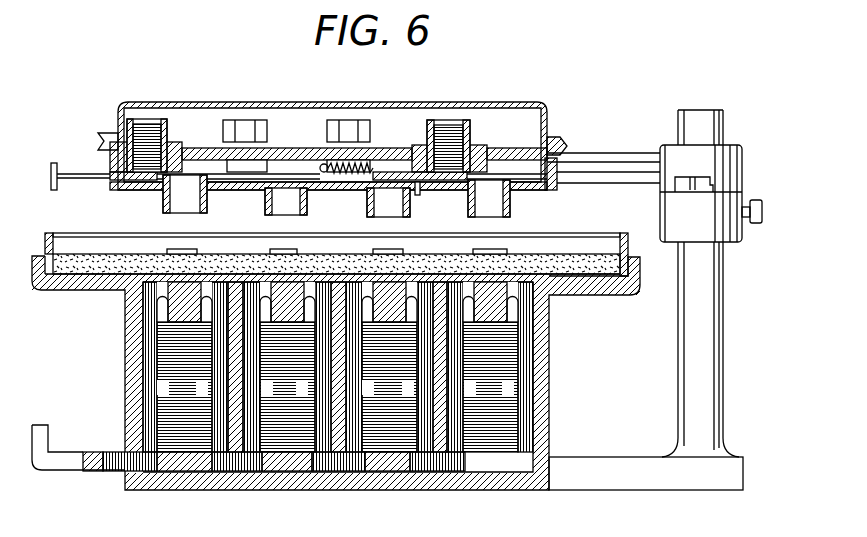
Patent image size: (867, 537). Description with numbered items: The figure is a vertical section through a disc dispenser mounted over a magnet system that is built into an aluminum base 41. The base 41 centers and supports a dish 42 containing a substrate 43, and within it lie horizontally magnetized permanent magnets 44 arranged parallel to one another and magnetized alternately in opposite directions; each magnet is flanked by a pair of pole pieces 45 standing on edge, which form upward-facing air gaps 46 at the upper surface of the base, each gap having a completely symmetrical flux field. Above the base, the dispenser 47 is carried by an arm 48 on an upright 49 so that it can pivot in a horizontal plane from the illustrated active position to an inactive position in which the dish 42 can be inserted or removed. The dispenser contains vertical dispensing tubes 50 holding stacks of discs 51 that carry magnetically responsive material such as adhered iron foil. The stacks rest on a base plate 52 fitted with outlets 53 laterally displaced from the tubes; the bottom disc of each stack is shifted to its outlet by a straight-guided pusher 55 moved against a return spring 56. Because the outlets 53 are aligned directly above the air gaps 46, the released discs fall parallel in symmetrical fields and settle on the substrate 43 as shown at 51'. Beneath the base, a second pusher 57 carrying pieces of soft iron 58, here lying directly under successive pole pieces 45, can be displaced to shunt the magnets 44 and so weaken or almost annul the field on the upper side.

The aluminum base 41 is at (124, 371).
The dish 42 is at (50, 234).
The substrate 43 is at (603, 268).
The permanent magnets 44 is at (185, 445).
The pole pieces 45 is at (523, 372).
The air gaps 46 is at (205, 282).
The dispenser 47 is at (540, 102).
The arm 48 is at (613, 156).
The upright 49 is at (724, 378).
The dispensing tubes 50 is at (167, 133).
The discs 51 is at (302, 115).
The positioned discs 51' is at (357, 229).
The base plate 52 is at (331, 185).
The outlets 53 is at (208, 207).
The pusher 55 is at (82, 173).
The return spring 56 is at (384, 176).
The pusher 57 is at (72, 462).
The pieces of soft iron 58 is at (338, 462).